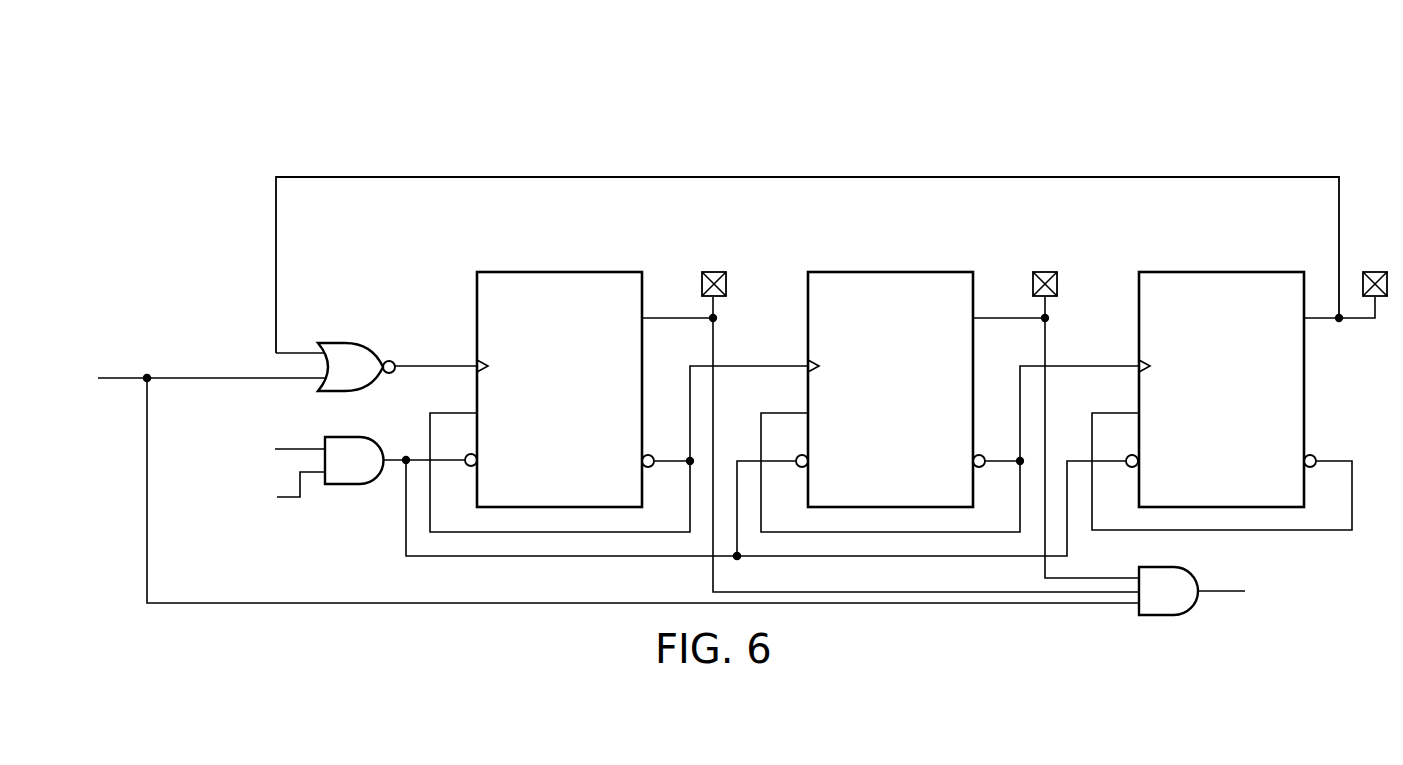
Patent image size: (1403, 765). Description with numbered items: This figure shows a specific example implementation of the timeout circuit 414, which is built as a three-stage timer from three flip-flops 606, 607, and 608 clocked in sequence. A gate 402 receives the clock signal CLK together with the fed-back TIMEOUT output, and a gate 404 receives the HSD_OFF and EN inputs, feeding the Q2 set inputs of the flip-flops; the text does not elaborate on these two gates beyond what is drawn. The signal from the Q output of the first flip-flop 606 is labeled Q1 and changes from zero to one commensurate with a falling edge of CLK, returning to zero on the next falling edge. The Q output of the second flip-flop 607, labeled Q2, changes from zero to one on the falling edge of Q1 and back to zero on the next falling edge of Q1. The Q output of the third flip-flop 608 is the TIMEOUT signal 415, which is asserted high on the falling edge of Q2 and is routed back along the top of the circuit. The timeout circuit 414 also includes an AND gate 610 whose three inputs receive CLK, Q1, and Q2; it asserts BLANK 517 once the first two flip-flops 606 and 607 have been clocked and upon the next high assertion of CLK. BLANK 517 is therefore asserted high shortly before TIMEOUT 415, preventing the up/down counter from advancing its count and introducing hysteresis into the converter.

The timeout circuit 414 is at (592, 106).
The TIMEOUT signal 415 is at (807, 178).
The NOR gate 402 is at (348, 343).
The AND gate 404 is at (346, 486).
The flip-flop 606 is at (534, 262).
The flip-flop 607 is at (919, 262).
The flip-flop 608 is at (1249, 262).
The AND gate 610 is at (1160, 617).
The BLANK signal 517 is at (1220, 594).